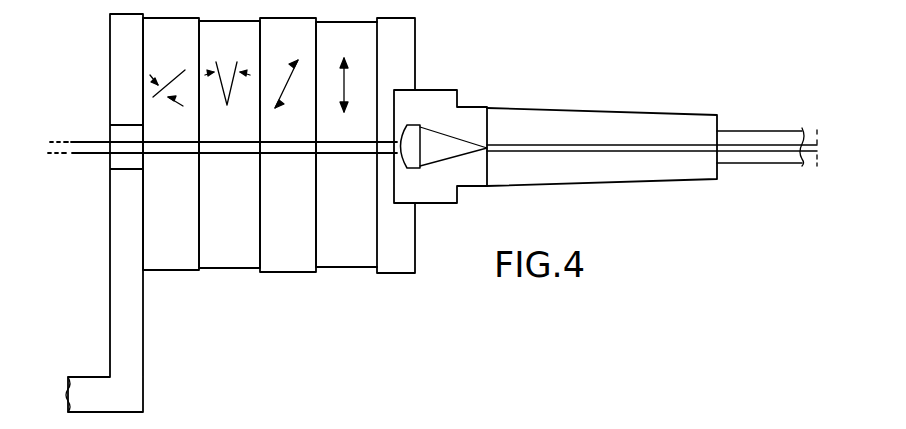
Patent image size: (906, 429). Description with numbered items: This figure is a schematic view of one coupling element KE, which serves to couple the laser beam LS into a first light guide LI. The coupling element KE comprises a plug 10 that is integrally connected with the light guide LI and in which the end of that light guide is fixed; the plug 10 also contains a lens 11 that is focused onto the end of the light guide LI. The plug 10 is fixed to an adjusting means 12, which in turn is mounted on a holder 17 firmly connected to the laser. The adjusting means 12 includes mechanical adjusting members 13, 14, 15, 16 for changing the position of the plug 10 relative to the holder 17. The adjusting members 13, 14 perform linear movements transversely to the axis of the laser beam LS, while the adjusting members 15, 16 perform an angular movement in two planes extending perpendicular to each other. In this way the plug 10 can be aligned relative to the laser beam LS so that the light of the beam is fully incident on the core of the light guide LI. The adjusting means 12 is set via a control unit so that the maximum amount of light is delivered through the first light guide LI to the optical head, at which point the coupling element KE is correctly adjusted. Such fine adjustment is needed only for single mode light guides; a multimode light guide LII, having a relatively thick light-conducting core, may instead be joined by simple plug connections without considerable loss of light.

The plug 10 is at (627, 173).
The lens 11 is at (418, 163).
The adjusting means 12 is at (316, 315).
The adjusting member 13 is at (226, 255).
The adjusting member 14 is at (171, 255).
The adjusting member 15 is at (348, 255).
The adjusting member 16 is at (284, 255).
The holder 17 is at (128, 350).
The laser beam LS is at (85, 147).
The first light guide LI is at (767, 148).
The multimode light guide LII is at (227, 427).
The coupling element KE is at (432, 58).